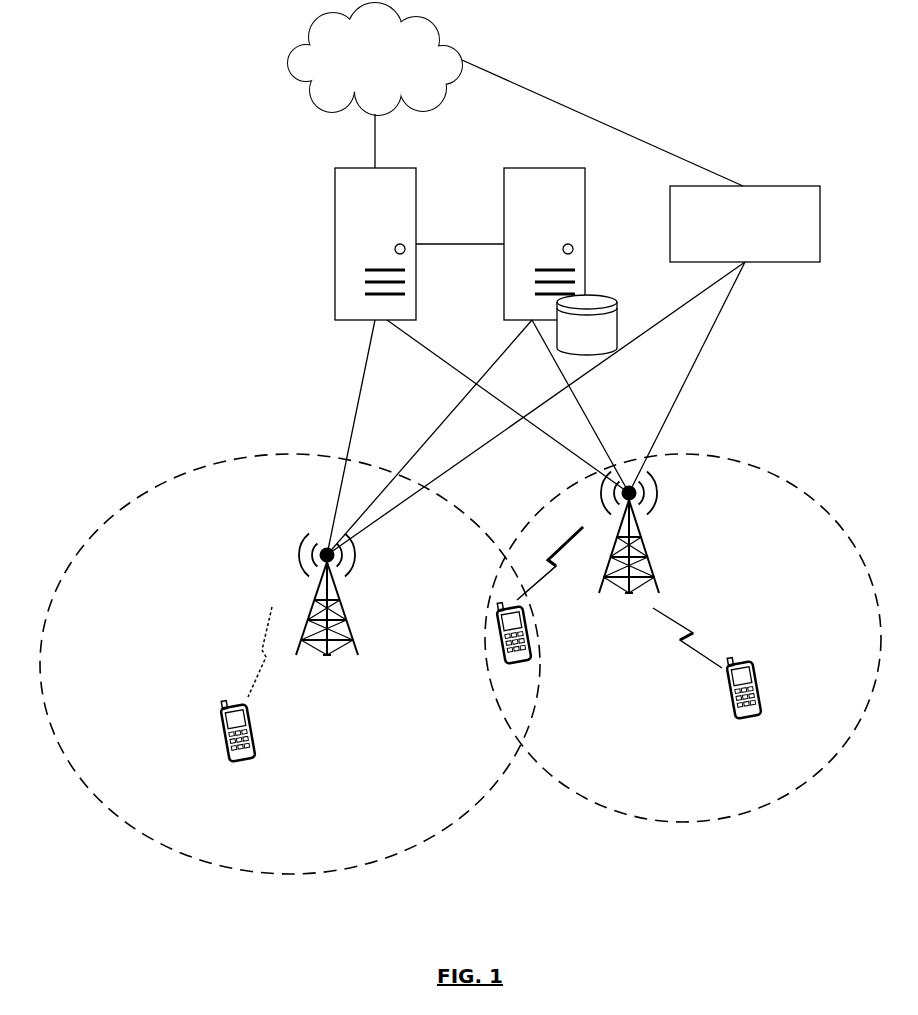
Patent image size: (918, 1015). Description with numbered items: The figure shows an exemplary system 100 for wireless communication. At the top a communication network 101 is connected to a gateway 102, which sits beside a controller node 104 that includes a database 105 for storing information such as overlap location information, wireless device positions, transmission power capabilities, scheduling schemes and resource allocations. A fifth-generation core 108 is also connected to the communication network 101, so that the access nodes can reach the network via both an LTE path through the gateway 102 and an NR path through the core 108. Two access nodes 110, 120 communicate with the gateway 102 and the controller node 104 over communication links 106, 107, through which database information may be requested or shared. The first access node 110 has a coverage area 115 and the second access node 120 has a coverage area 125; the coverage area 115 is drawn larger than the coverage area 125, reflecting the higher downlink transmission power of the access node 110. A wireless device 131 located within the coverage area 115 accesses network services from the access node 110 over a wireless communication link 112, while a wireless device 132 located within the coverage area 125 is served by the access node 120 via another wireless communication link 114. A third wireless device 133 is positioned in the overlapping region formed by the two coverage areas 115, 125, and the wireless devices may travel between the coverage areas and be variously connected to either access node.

The system 100 is at (548, 84).
The communication network 101 is at (375, 59).
The gateway 102 is at (335, 205).
The controller node 104 is at (585, 225).
The database 105 is at (616, 297).
The communication link 106 is at (438, 357).
The communication link 107 is at (403, 410).
The 5G core 108 is at (745, 224).
The access node 110 is at (274, 566).
The wireless communication link 112 is at (264, 656).
The wireless communication link 114 is at (688, 620).
The coverage area 115 is at (290, 873).
The access node 120 is at (647, 570).
The coverage area 125 is at (683, 822).
The wireless device 131 is at (241, 760).
The wireless device 132 is at (738, 716).
The wireless device 133 is at (515, 661).